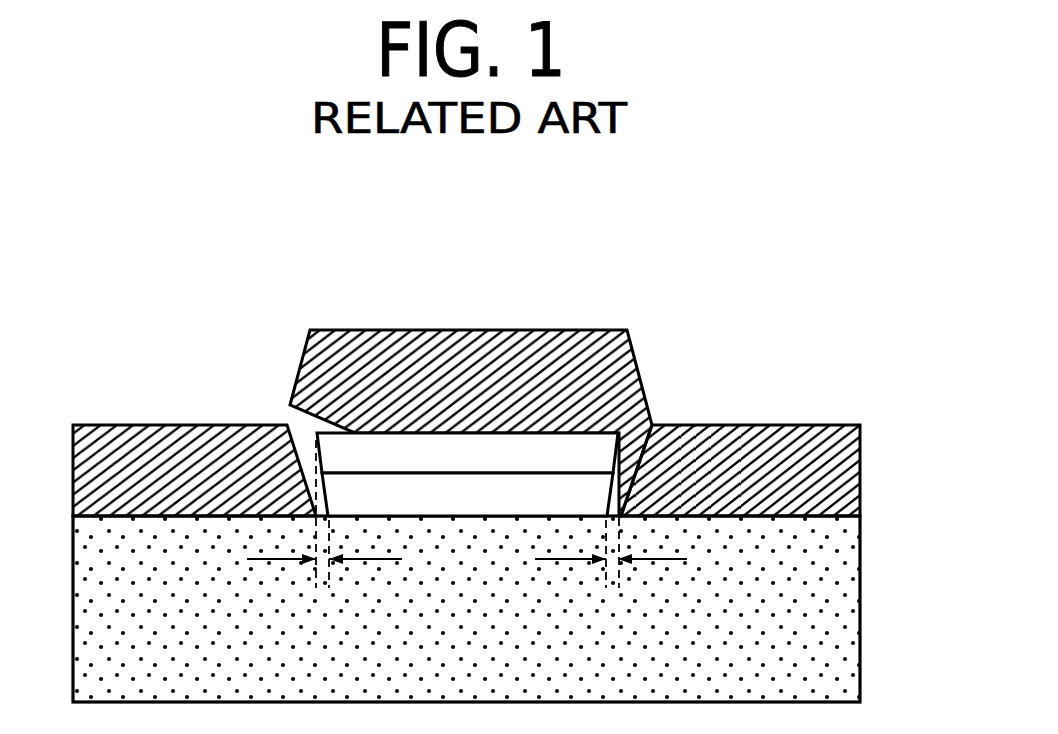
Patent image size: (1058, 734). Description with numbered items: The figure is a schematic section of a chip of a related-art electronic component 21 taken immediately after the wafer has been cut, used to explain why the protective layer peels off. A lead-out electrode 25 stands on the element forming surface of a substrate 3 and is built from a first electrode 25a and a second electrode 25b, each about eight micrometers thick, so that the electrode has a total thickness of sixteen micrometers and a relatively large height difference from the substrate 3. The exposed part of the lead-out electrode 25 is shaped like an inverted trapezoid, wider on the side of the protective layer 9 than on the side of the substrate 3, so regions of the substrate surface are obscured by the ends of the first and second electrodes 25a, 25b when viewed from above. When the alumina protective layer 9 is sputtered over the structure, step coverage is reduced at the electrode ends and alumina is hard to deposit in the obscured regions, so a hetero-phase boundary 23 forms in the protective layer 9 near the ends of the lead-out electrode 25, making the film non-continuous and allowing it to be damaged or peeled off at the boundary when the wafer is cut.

The electronic component 21 is at (106, 247).
The substrate 3 is at (835, 590).
The protective layer 9 is at (123, 428).
The hetero-phase boundary 23 is at (305, 452).
The lead-out electrode 25 is at (467, 349).
The first electrode 25a is at (400, 497).
The second electrode 25b is at (480, 457).